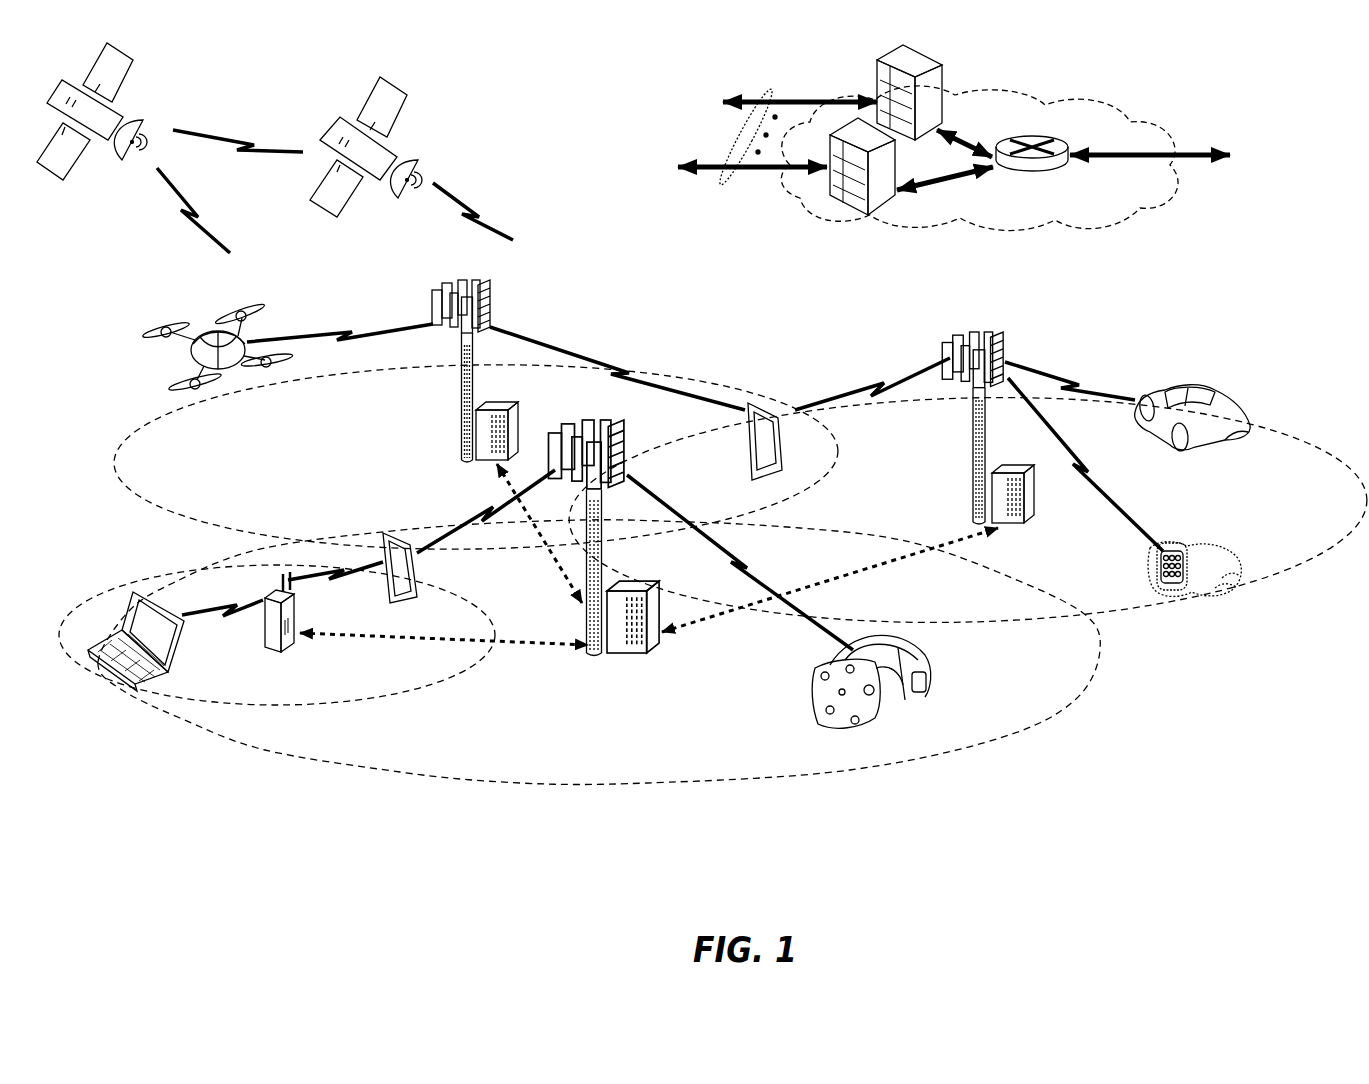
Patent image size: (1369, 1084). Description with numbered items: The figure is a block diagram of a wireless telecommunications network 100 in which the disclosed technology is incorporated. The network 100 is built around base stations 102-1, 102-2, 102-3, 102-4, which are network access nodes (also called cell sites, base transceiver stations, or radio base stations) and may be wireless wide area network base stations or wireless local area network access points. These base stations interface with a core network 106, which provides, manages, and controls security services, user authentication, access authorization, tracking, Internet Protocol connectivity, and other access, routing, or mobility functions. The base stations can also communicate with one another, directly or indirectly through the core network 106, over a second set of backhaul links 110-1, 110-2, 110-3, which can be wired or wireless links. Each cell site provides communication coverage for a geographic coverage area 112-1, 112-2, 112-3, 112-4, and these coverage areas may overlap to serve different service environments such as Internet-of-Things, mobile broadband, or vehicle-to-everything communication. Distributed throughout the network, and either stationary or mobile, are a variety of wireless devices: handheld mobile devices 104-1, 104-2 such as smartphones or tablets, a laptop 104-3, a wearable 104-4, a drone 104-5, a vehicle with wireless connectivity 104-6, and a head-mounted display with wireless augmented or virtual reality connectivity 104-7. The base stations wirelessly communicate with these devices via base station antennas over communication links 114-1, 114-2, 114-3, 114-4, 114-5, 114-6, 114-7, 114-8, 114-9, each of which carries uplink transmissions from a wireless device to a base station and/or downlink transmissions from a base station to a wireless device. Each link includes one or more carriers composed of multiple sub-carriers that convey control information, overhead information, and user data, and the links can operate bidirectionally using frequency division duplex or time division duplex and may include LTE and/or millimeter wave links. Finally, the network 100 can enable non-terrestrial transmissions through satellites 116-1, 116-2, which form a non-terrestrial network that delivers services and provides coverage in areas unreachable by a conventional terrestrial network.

The wireless telecommunications network 100 is at (1302, 112).
The core network 106 is at (1064, 222).
The satellite 116-1 is at (142, 114).
The satellite 116-2 is at (418, 153).
The base station 102-1 is at (600, 655).
The base station 102-2 is at (456, 405).
The base station 102-3 is at (971, 443).
The base station 102-4 is at (266, 645).
The handheld mobile device 104-1 is at (462, 574).
The handheld mobile device 104-2 is at (747, 440).
The laptop 104-3 is at (115, 671).
The wearable 104-4 is at (1175, 549).
The drone 104-5 is at (226, 372).
The vehicle with wireless connectivity 104-6 is at (1215, 396).
The head-mounted display with wireless AR/VR connectivity 104-7 is at (925, 675).
The backhaul link 110-1 is at (334, 640).
The backhaul link 110-2 is at (895, 565).
The backhaul link 110-3 is at (547, 568).
The geographic coverage area 112-1 is at (520, 783).
The geographic coverage area 112-2 is at (398, 690).
The geographic coverage area 112-3 is at (177, 510).
The geographic coverage area 112-4 is at (1273, 441).
The communication link 114-1 is at (795, 556).
The communication link 114-2 is at (485, 511).
The communication link 114-3 is at (193, 614).
The communication link 114-4 is at (340, 584).
The communication link 114-5 is at (344, 328).
The communication link 114-6 is at (626, 368).
The communication link 114-7 is at (872, 382).
The communication link 114-8 is at (1101, 478).
The communication link 114-9 is at (1072, 378).